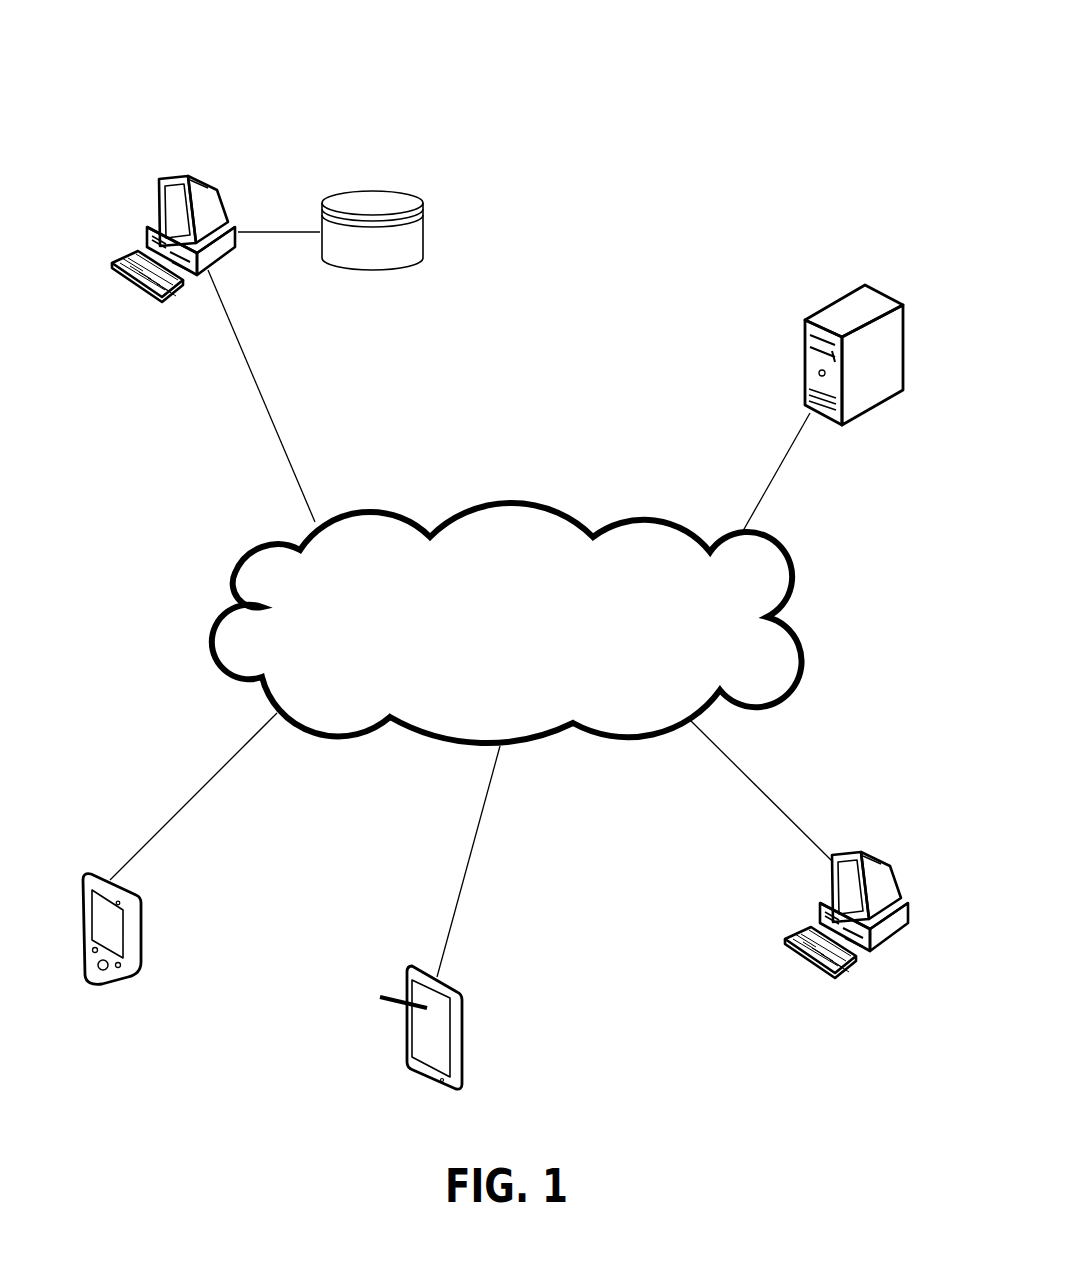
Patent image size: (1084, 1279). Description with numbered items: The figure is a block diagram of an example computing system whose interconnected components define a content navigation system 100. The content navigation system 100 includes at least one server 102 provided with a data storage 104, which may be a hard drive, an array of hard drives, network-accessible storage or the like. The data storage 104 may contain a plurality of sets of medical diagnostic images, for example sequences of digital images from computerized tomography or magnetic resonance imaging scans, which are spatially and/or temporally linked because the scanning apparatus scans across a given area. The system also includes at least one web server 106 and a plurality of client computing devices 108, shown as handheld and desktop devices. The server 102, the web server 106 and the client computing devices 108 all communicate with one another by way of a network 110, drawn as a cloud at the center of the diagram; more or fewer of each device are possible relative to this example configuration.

The content navigation system 100 is at (654, 84).
The server 102 is at (136, 184).
The data storage 104 is at (373, 203).
The web server 106 is at (862, 407).
The client computing devices 108 is at (164, 909).
The network 110 is at (667, 703).